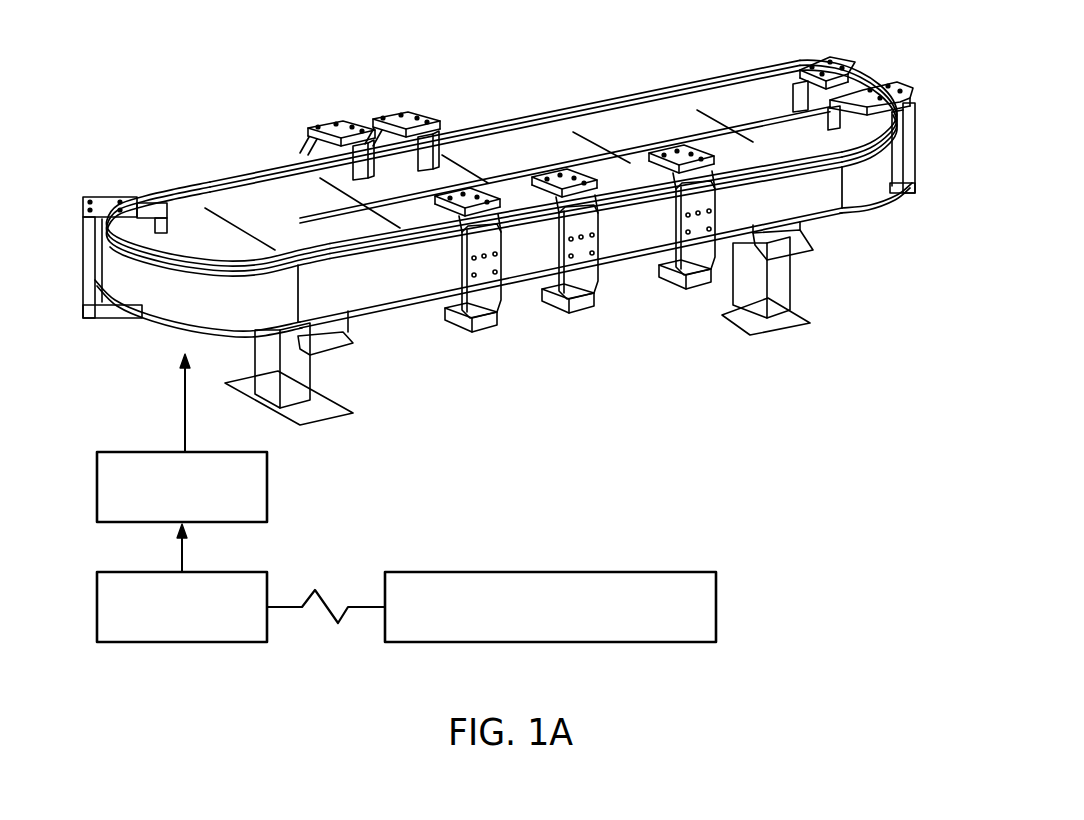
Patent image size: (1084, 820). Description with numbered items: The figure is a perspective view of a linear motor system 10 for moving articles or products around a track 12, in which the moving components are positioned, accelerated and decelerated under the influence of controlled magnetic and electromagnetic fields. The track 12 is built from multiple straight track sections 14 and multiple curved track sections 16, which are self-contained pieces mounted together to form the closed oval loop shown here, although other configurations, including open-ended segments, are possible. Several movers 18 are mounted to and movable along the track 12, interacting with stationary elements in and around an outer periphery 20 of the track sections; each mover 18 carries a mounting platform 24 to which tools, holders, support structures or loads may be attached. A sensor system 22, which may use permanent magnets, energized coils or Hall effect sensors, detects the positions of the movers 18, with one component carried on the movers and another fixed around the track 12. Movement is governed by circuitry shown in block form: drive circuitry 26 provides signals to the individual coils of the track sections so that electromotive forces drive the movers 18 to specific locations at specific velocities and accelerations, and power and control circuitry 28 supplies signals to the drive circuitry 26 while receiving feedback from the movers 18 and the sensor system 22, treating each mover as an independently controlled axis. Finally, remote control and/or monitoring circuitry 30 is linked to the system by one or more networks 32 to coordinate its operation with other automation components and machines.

The linear motor system 10 is at (843, 24).
The track 12 is at (240, 292).
The straight track sections 14 is at (430, 268).
The curved track sections 16 is at (191, 297).
The movers 18 is at (388, 114).
The outer periphery 20 is at (378, 288).
The sensor system 22 is at (800, 100).
The mounting platform 24 is at (495, 307).
The drive circuitry 26 is at (268, 483).
The power and control circuitry 28 is at (268, 590).
The remote control and/or monitoring circuitry 30 is at (716, 608).
The networks 32 is at (368, 622).